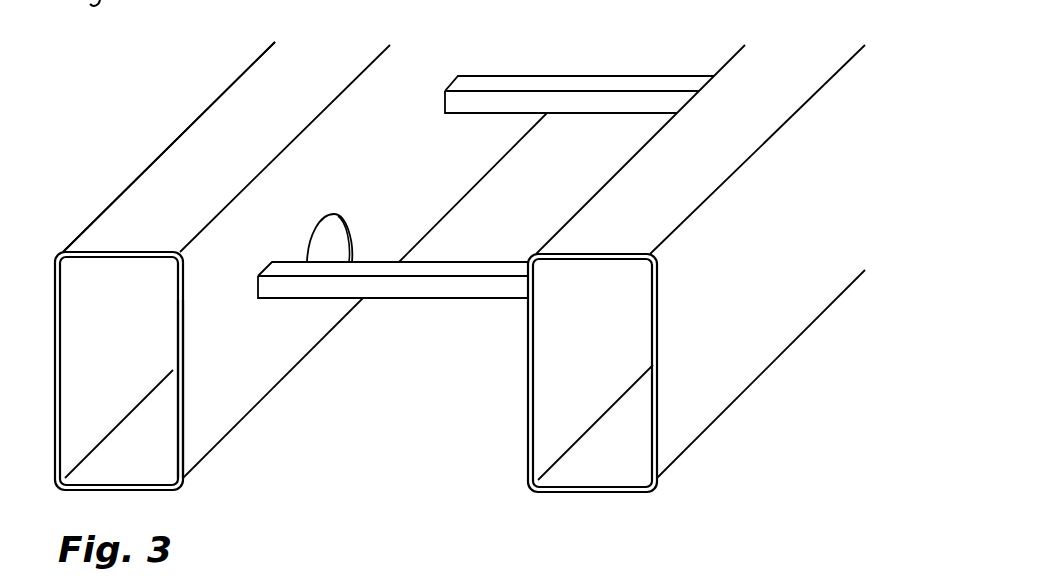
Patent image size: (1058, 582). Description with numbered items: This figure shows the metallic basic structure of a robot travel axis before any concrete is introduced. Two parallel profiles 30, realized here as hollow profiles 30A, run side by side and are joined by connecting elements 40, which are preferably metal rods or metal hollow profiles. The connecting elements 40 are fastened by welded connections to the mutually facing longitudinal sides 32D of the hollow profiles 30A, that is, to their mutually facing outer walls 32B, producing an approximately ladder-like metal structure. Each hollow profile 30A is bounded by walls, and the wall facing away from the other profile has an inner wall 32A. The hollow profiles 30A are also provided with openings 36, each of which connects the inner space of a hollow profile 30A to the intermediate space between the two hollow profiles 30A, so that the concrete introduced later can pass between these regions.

The profile 30 is at (252, 130).
The hollow profile 30A is at (655, 167).
The inner wall 32A is at (180, 428).
The outer wall 32B is at (183, 397).
The longitudinal side 32D is at (227, 253).
The opening 36 is at (337, 232).
The connecting element 40 is at (372, 268).